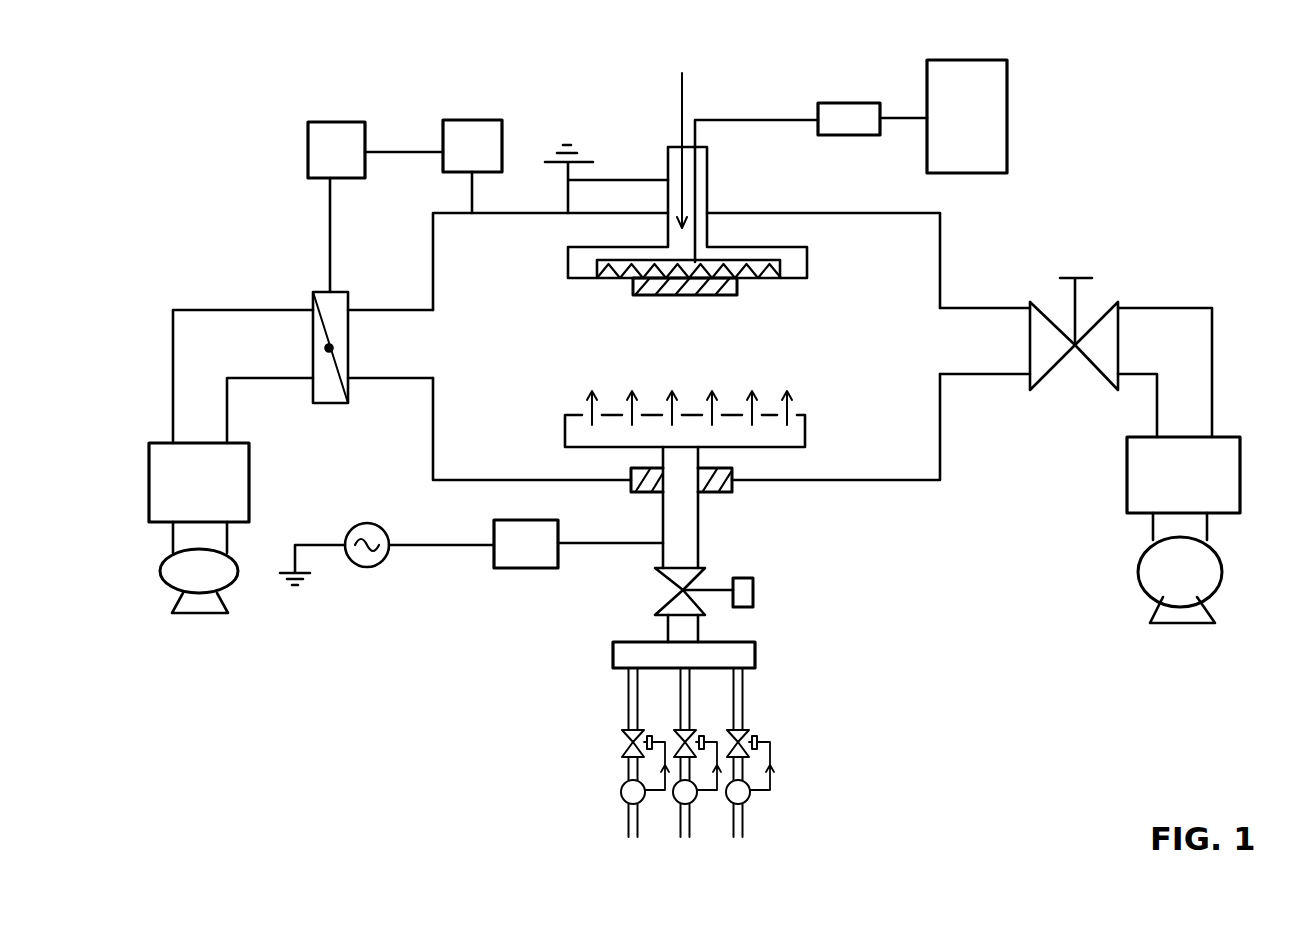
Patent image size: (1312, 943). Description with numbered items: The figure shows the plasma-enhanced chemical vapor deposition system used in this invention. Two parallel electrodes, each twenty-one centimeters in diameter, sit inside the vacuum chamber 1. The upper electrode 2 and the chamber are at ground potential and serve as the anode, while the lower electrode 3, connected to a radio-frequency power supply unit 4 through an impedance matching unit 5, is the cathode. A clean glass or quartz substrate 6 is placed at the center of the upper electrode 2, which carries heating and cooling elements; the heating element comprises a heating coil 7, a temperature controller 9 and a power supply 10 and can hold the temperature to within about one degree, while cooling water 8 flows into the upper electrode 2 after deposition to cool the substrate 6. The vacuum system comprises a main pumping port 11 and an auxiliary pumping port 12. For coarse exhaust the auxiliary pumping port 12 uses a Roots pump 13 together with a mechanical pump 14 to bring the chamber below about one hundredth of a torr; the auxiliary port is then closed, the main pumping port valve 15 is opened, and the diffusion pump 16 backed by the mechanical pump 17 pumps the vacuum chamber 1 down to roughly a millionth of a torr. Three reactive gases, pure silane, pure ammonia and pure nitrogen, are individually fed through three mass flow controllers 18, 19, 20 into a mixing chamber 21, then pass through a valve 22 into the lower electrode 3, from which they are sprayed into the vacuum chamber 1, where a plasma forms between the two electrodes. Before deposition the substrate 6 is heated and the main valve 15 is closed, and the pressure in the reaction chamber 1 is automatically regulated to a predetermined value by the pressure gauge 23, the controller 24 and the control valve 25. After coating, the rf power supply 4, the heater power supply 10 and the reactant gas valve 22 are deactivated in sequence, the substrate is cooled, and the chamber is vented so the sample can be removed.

The vacuum chamber 1 is at (951, 271).
The upper electrode 2 is at (812, 263).
The lower electrode 3 is at (812, 437).
The rf power supply unit 4 is at (369, 567).
The impedance matching unit 5 is at (508, 572).
The substrate 6 is at (697, 300).
The heating coil 7 is at (609, 276).
The cooling water 8 is at (682, 133).
The temperature controller 9 is at (841, 110).
The power supply 10 is at (970, 66).
The main pumping port 11 is at (975, 376).
The auxiliary pumping port 12 is at (383, 380).
The Roots pump 13 is at (149, 487).
The rotary pump 14 is at (160, 578).
The main pumping port valve 15 is at (1088, 278).
The diffusion pump 16 is at (1243, 473).
The mechanical pump 17 is at (1222, 570).
The mass flow controller 18 is at (746, 771).
The mass flow controller 19 is at (693, 771).
The mass flow controller 20 is at (641, 772).
The mixing chamber 21 is at (755, 655).
The valve 22 is at (755, 596).
The pressure gauge 23 is at (472, 166).
The controller 24 is at (375, 207).
The control valve 25 is at (312, 292).